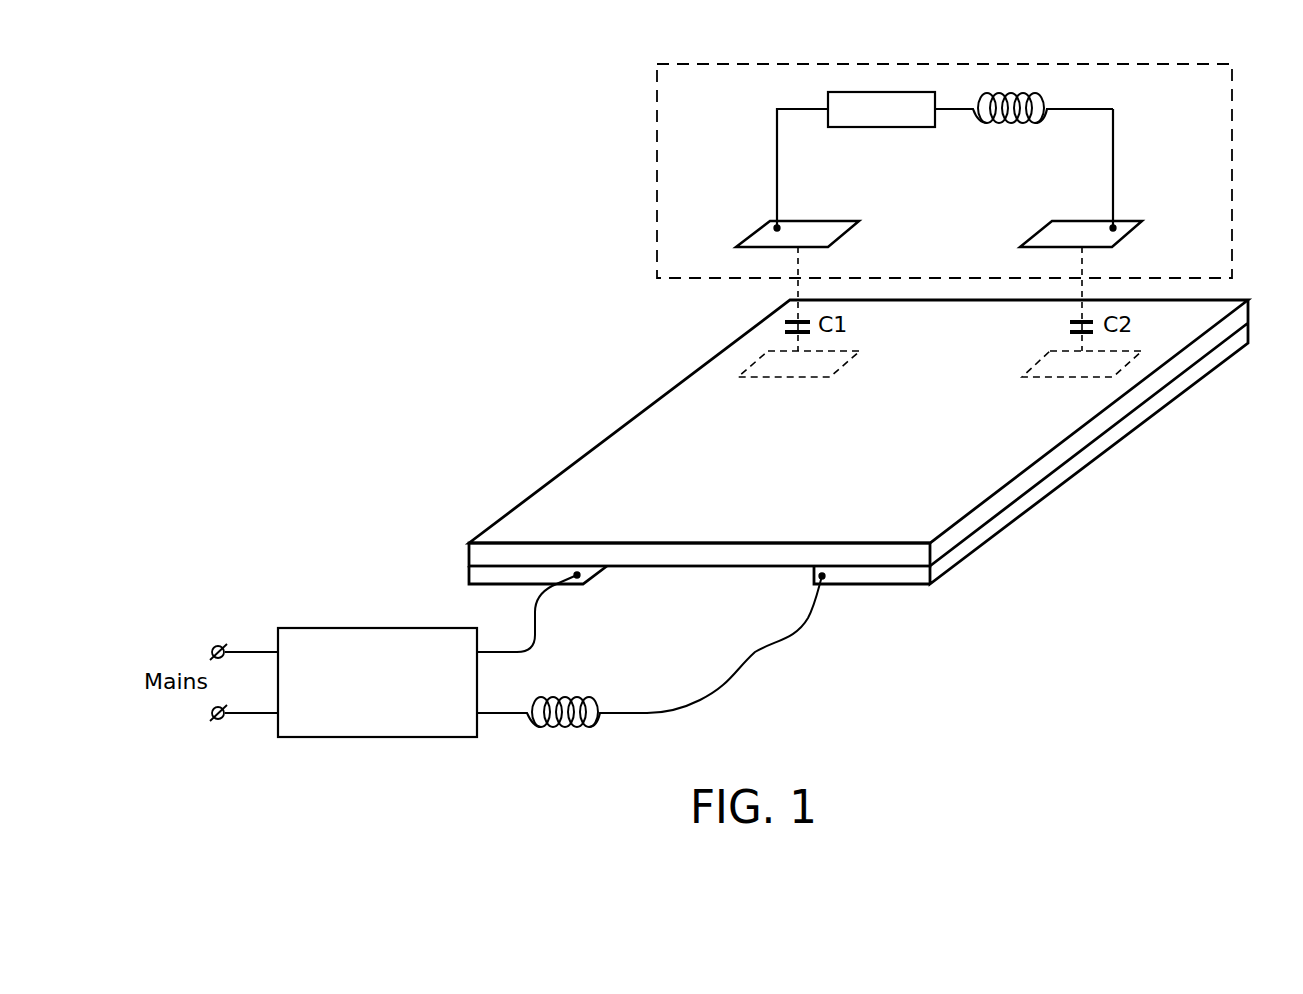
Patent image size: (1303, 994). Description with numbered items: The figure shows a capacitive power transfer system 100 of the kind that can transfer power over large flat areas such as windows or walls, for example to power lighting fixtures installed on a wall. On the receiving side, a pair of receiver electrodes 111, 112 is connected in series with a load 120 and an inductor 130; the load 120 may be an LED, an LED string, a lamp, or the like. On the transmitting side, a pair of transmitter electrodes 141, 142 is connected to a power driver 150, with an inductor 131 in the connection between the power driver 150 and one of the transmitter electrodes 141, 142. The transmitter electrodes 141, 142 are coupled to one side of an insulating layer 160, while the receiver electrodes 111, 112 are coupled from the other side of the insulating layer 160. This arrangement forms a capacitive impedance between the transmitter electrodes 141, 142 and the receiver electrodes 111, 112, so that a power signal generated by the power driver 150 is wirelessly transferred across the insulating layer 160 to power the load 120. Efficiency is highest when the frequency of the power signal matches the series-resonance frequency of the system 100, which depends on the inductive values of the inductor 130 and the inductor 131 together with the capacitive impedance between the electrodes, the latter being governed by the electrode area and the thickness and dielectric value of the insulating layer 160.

The capacitive power transfer system 100 is at (336, 207).
The receiver electrode 111 is at (776, 168).
The receiver electrode 112 is at (1114, 168).
The load 120 is at (880, 127).
The inductor 130 is at (1012, 123).
The inductor 131 is at (565, 728).
The transmitter electrode 141 is at (475, 576).
The transmitter electrode 142 is at (902, 575).
The power driver 150 is at (372, 737).
The insulating layer 160 is at (1007, 495).